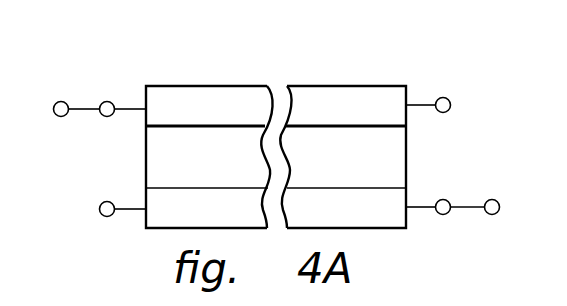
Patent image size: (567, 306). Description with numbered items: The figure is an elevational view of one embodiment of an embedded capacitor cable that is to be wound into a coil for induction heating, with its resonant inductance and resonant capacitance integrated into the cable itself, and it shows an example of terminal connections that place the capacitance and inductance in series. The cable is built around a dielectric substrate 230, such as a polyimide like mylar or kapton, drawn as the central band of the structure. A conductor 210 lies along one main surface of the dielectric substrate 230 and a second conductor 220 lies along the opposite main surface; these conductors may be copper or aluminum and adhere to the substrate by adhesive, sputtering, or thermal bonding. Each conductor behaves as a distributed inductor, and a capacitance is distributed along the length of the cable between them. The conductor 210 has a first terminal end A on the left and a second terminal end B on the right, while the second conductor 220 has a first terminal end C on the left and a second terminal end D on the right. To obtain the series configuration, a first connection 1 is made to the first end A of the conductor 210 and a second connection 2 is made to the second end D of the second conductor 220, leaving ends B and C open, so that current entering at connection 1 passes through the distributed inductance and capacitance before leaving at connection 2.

The first connection 1 is at (77, 96).
The second connection 2 is at (475, 194).
The first end of conductor 210 A is at (123, 96).
The second end of conductor 210 B is at (428, 93).
The first end of conductor 220 C is at (123, 195).
The second end of conductor 220 D is at (428, 194).
The conductor 210 is at (322, 92).
The second conductor 220 is at (383, 221).
The dielectric substrate 230 is at (333, 170).